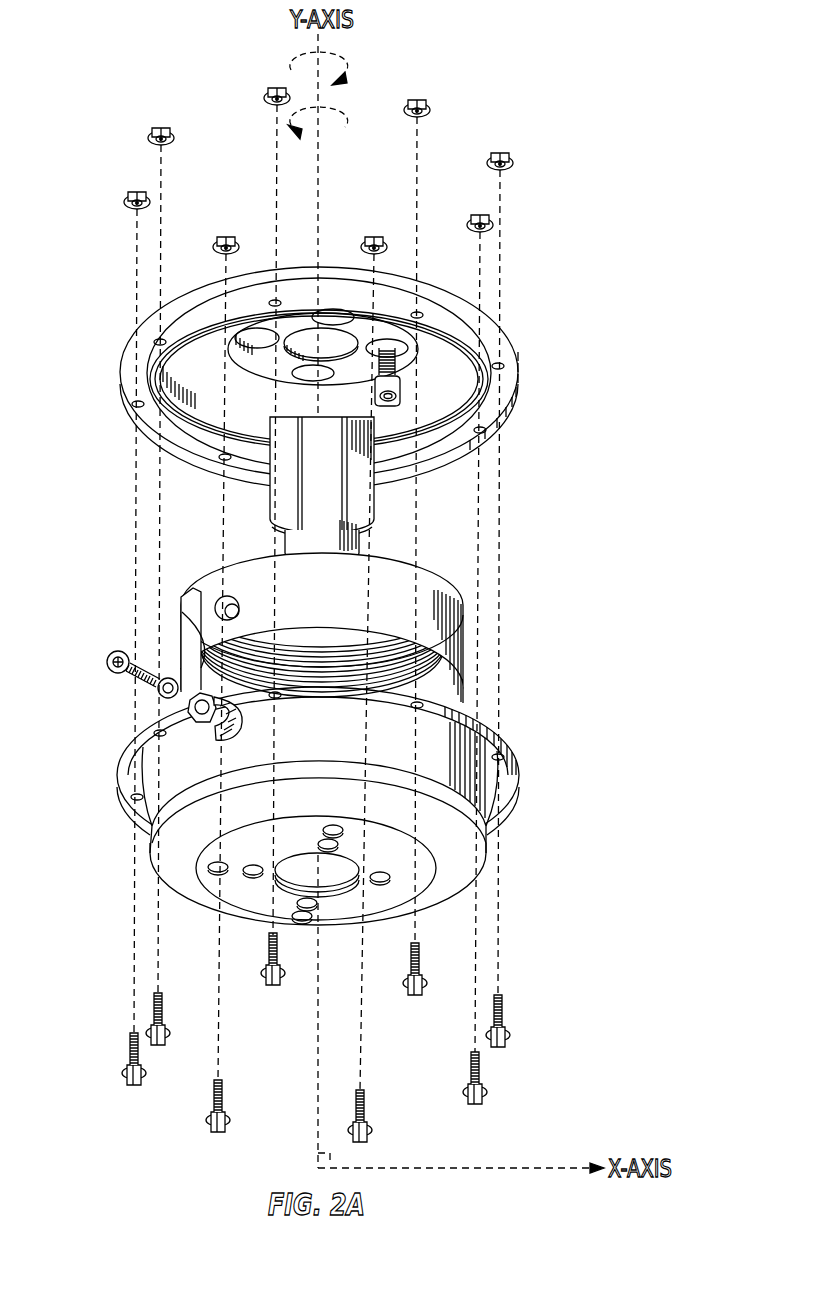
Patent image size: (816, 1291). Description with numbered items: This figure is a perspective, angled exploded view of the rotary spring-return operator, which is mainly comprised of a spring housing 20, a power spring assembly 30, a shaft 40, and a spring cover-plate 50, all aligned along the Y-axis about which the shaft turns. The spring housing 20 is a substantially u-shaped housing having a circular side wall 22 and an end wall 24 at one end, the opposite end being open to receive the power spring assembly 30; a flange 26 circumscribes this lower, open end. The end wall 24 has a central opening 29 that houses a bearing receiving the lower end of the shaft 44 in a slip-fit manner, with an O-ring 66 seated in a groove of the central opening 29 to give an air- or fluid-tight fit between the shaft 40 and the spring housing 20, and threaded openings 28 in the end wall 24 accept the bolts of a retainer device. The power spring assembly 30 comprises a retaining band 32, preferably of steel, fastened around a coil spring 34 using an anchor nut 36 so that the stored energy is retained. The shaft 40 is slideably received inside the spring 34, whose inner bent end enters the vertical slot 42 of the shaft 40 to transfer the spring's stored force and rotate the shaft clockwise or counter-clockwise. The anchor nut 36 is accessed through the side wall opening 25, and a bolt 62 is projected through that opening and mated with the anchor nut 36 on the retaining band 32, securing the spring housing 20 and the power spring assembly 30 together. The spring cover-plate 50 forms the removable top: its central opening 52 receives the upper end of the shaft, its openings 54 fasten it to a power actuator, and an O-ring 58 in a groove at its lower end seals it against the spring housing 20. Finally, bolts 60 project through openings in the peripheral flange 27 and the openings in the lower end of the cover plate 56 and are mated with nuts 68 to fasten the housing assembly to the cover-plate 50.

The spring housing 20 is at (338, 862).
The circular side wall 22 is at (317, 775).
The end wall 24 is at (282, 899).
The side wall opening 25 is at (210, 708).
The flange 26 is at (125, 742).
The peripheral flange 27 is at (505, 756).
The threaded openings 28 is at (302, 922).
The central opening 29 is at (320, 868).
The power spring assembly 30 is at (332, 613).
The retaining band 32 is at (245, 588).
The coil spring 34 is at (180, 623).
The anchor nut 36 is at (240, 604).
The shaft 40 is at (348, 490).
The vertical slot 42 is at (297, 484).
The lower end of the shaft 44 is at (353, 543).
The spring cover-plate 50 is at (347, 339).
The central opening 52 is at (327, 340).
The openings 54 is at (247, 335).
The openings in the lower end of the cover plate 56 is at (125, 406).
The O-ring 58 is at (487, 389).
The bolts 60 is at (124, 1079).
The bolt 62 is at (108, 656).
The O-ring 66 is at (275, 872).
The nuts 68 is at (126, 198).